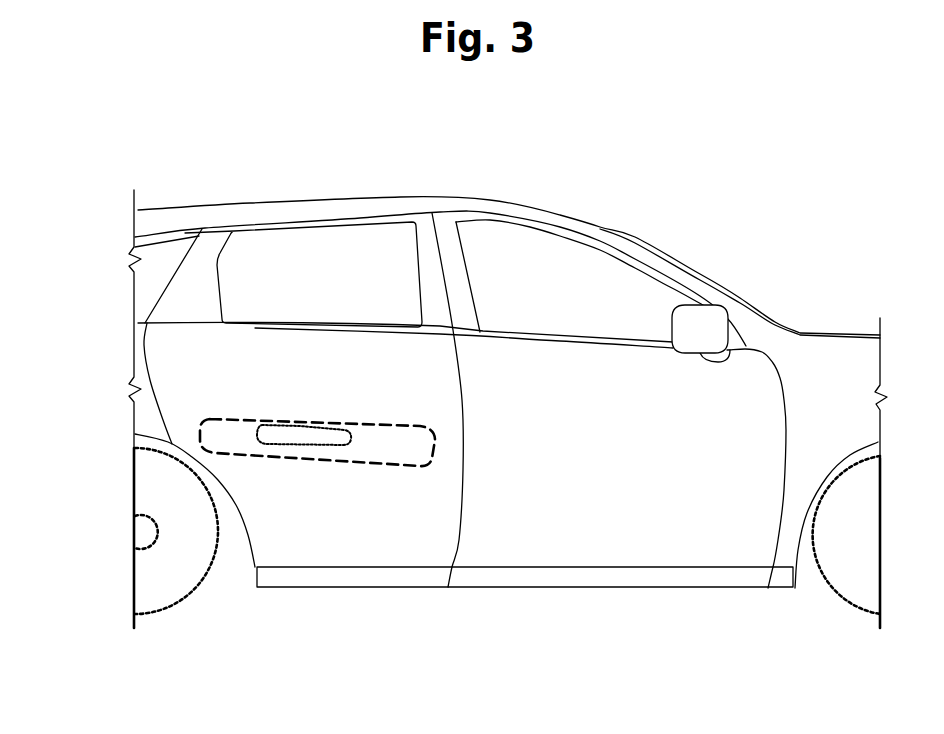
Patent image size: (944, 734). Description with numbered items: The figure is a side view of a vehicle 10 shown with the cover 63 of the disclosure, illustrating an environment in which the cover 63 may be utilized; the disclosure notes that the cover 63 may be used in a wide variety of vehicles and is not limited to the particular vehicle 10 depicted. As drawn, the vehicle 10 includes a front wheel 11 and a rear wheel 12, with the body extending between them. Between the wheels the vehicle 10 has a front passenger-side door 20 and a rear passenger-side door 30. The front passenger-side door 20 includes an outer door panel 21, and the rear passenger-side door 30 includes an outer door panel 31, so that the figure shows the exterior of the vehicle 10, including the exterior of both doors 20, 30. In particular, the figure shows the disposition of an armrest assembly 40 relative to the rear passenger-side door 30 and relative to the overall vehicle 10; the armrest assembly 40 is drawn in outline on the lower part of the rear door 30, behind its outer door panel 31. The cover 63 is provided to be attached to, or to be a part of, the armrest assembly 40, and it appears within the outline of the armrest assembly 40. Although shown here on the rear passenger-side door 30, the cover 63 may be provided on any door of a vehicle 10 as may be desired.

The vehicle 10 is at (657, 225).
The front wheel 11 is at (857, 588).
The rear wheel 12 is at (147, 577).
The front passenger-side door 20 is at (729, 385).
The outer door panel 21 is at (592, 558).
The rear passenger-side door 30 is at (296, 350).
The outer door panel 31 is at (427, 552).
The armrest assembly 40 is at (380, 470).
The cover 63 is at (287, 448).